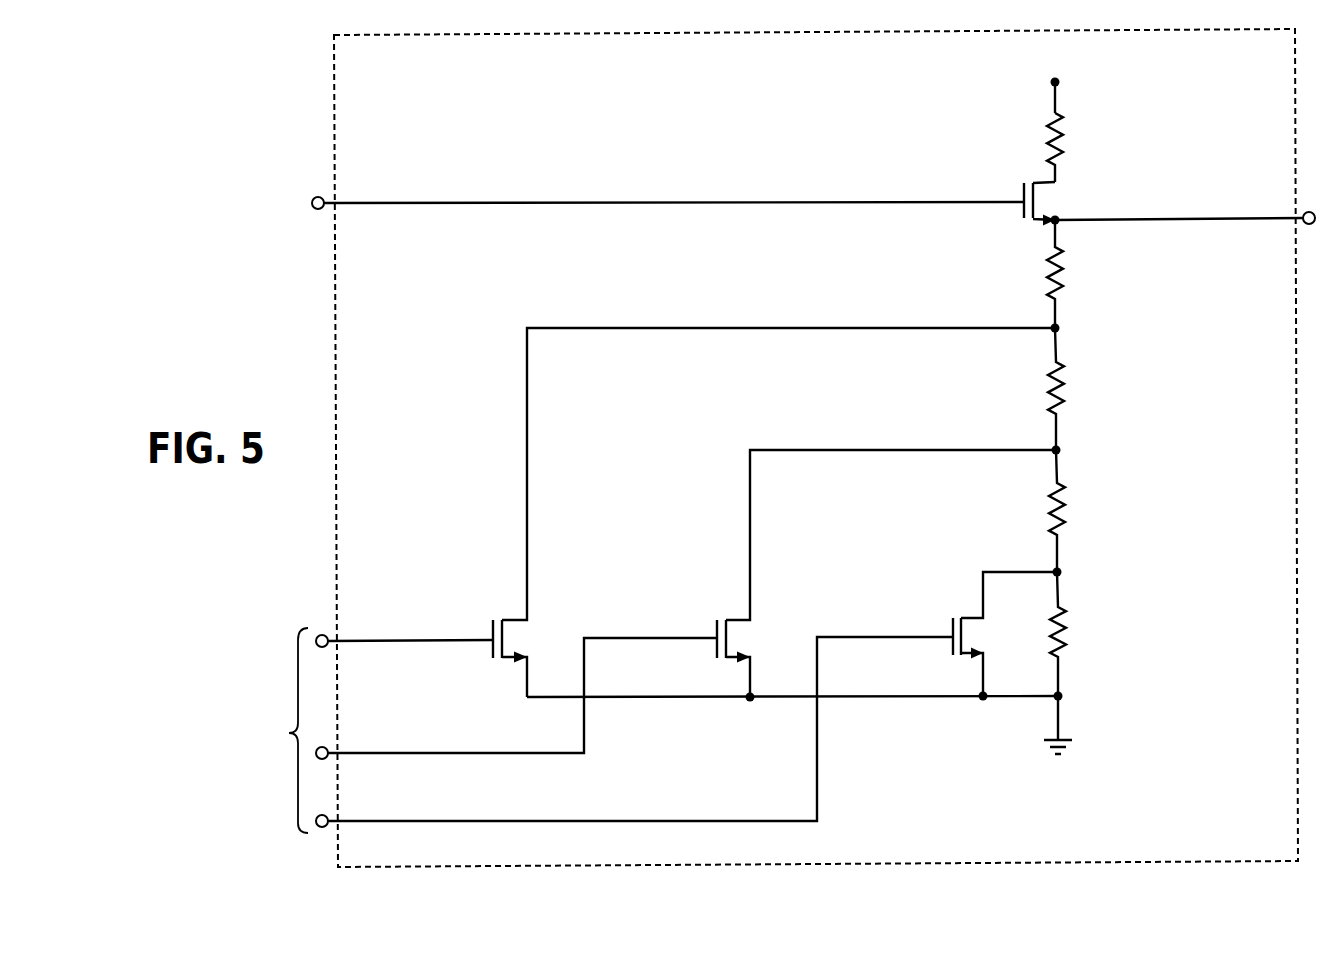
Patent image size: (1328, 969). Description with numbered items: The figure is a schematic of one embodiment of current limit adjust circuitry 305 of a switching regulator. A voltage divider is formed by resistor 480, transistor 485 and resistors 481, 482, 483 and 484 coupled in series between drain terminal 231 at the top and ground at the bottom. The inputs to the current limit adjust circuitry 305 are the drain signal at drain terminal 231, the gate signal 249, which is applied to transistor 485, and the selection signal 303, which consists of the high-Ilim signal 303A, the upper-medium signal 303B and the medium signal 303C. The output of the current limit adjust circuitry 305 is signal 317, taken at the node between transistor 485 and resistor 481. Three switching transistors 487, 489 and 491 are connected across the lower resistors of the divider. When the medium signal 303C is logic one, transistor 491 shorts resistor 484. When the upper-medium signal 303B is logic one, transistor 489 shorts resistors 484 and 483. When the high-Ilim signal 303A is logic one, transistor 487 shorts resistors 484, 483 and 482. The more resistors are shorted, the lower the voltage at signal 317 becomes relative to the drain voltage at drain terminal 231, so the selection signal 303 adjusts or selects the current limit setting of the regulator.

The current limit adjust circuitry 305 is at (300, 140).
The gate signal 249 is at (731, 201).
The output signal 317 is at (1113, 219).
The drain terminal 231 is at (1067, 83).
The resistor 480 is at (1070, 147).
The resistor 481 is at (1070, 277).
The resistor 482 is at (1072, 383).
The resistor 483 is at (1072, 505).
The resistor 484 is at (1073, 627).
The transistor 485 is at (1016, 190).
The transistor 487 is at (487, 613).
The transistor 489 is at (717, 613).
The transistor 491 is at (938, 615).
The signal 303 is at (277, 730).
The high-Ilim signal 303A is at (372, 645).
The upper-medium signal 303B is at (372, 757).
The medium signal 303C is at (376, 830).